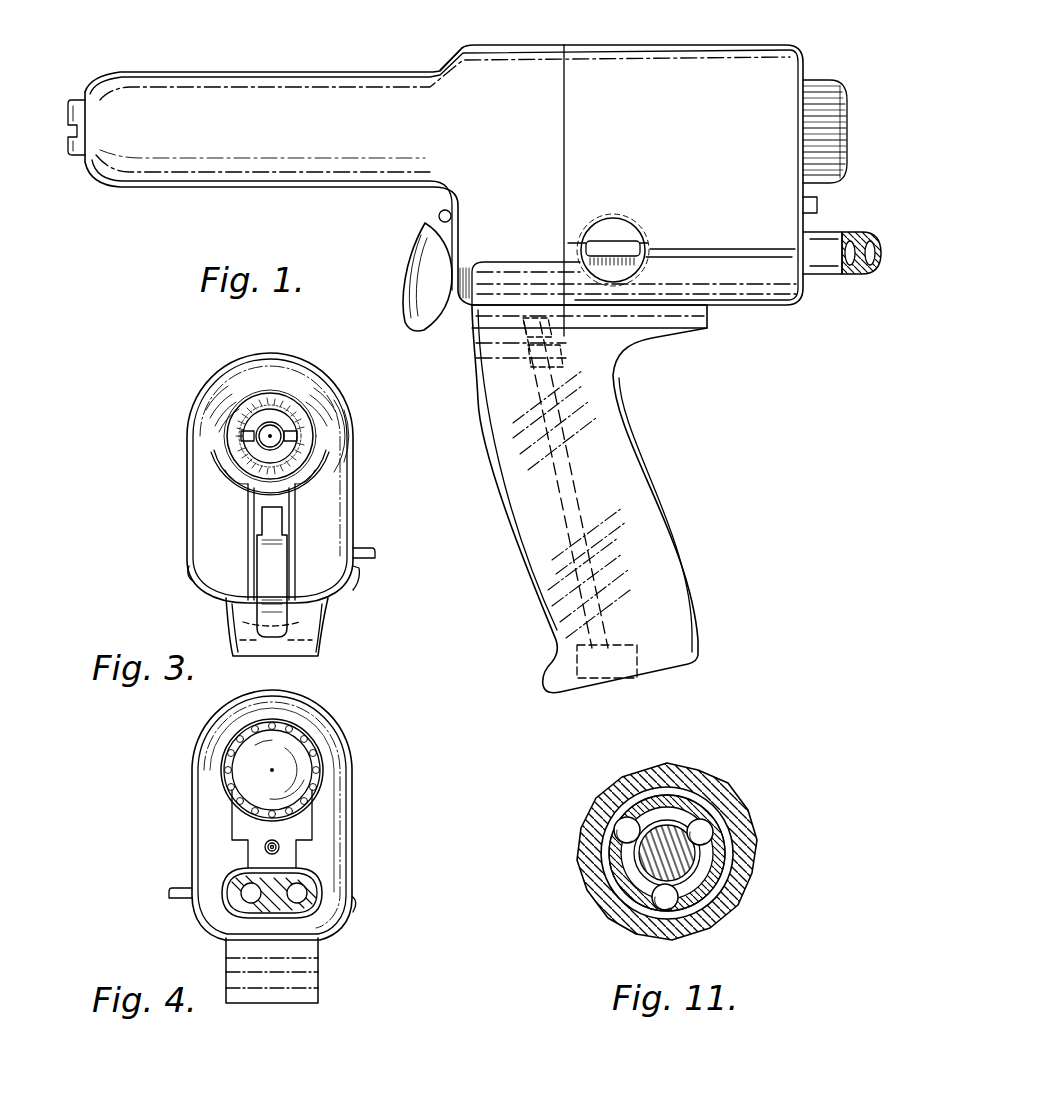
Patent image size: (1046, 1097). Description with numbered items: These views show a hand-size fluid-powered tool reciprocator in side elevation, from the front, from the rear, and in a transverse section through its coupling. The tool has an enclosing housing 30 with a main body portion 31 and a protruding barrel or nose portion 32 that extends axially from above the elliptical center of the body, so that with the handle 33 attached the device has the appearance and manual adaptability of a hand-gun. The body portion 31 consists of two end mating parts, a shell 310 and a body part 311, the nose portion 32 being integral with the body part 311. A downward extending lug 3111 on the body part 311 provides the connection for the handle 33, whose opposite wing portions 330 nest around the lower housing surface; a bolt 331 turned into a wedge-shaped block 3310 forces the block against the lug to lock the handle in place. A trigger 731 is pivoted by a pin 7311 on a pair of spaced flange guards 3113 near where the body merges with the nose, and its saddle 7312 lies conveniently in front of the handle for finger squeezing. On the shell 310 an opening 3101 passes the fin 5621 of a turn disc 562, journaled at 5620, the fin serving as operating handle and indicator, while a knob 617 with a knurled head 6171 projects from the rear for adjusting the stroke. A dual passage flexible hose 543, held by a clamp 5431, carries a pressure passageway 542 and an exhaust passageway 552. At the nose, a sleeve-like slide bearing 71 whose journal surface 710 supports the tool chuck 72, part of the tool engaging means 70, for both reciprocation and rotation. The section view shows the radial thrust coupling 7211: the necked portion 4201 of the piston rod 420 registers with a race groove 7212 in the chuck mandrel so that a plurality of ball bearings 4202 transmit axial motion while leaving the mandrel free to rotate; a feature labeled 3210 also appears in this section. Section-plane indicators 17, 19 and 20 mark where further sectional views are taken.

In FIG. 1, the housing 30 is at (372, 60).
In FIG. 3, the housing 30 is at (198, 387).
In FIG. 1, the main body portion 31 is at (421, 100).
In FIG. 3, the main body portion 31 is at (197, 431).
In FIG. 4, the main body portion 31 is at (272, 815).
In FIG. 1, the barrel or nose portion 32 is at (255, 100).
In FIG. 3, the barrel or nose portion 32 is at (312, 437).
In FIG. 11, the barrel or nose portion 32 is at (628, 778).
In FIG. 1, the handle 33 is at (648, 518).
In FIG. 3, the handle 33 is at (208, 607).
In FIG. 4, the handle 33 is at (330, 953).
In FIG. 1, the tool chuck 72 is at (84, 98).
In FIG. 3, the tool chuck 72 is at (290, 422).
In FIG. 3, the tool engaging means 70 is at (290, 446).
In FIG. 11, the slide bearing 71 is at (614, 802).
In FIG. 1, the section line 17 is at (543, 162).
In FIG. 4, the section line 19 is at (262, 681).
In FIG. 4, the section line 20 is at (283, 1008).
In FIG. 1, the body part 311 is at (492, 85).
In FIG. 3, the body part 311 is at (206, 397).
In FIG. 1, the body part shell 310 is at (712, 82).
In FIG. 1, the wing portions 330 is at (525, 268).
In FIG. 3, the wing portions 330 is at (194, 576).
In FIG. 4, the wing portions 330 is at (350, 912).
In FIG. 1, the bolt 331 is at (612, 600).
In FIG. 1, the knob 617 is at (820, 95).
In FIG. 4, the knob 617 is at (258, 762).
In FIG. 1, the knurled head 6171 is at (818, 146).
In FIG. 4, the knurled head 6171 is at (238, 778).
In FIG. 1, the flexible hose 543 is at (852, 231).
In FIG. 4, the flexible hose 543 is at (243, 911).
In FIG. 1, the passageway 542 is at (847, 265).
In FIG. 4, the passageway 542 is at (246, 896).
In FIG. 1, the second passageway 552 is at (870, 266).
In FIG. 4, the second passageway 552 is at (306, 890).
In FIG. 4, the clamp 5431 is at (306, 874).
In FIG. 1, the opening 3101 is at (601, 222).
In FIG. 1, the journal 5620 is at (640, 215).
In FIG. 1, the turn disc 562 is at (622, 236).
In FIG. 1, the fin 5621 is at (645, 246).
In FIG. 3, the fin 5621 is at (362, 556).
In FIG. 4, the fin 5621 is at (183, 890).
In FIG. 1, the pin 7311 is at (438, 217).
In FIG. 1, the trigger 731 is at (420, 290).
In FIG. 3, the trigger 731 is at (257, 546).
In FIG. 1, the saddle 7312 is at (414, 268).
In FIG. 3, the saddle 7312 is at (272, 582).
In FIG. 1, the flange guards 3113 is at (440, 238).
In FIG. 3, the flange guards 3113 is at (254, 515).
In FIG. 1, the lug 3111 is at (500, 312).
In FIG. 3, the lug 3111 is at (300, 622).
In FIG. 3, the wedge-shaped block 3310 is at (290, 642).
In FIG. 11, the nose piece bore 3210 is at (672, 772).
In FIG. 11, the race groove 7212 is at (690, 800).
In FIG. 11, the radial thrust type coupling 7211 is at (702, 818).
In FIG. 11, the journal surface 710 is at (604, 860).
In FIG. 11, the piston rod 420 is at (672, 858).
In FIG. 11, the necked portion 4201 is at (702, 886).
In FIG. 11, the ball bearings 4202 is at (625, 829).